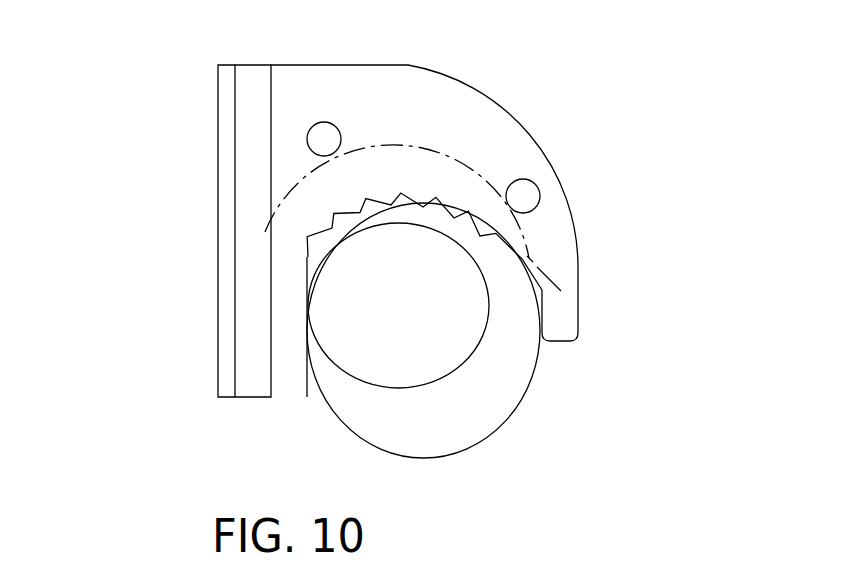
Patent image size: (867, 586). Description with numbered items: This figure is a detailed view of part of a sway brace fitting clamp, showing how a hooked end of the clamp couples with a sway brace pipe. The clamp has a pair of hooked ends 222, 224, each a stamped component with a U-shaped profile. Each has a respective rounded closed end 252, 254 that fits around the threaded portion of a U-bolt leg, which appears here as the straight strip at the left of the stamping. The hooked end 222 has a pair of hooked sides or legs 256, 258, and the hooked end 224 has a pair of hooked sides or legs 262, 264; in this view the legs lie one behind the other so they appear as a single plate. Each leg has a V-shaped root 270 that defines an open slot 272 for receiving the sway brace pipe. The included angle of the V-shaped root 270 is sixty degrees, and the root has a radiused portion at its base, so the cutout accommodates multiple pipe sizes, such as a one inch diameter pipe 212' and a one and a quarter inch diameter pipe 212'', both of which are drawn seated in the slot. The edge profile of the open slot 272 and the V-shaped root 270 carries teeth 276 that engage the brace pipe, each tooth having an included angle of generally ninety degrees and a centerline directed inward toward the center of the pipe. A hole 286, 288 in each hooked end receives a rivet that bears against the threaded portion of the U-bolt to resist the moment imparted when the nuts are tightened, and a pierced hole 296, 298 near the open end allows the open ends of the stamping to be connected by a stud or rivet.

The hooked end 222 is at (159, 210).
The hooked end 224 is at (159, 210).
The rounded closed end 252 is at (141, 231).
The rounded closed end 254 is at (228, 135).
The hooked side 256 is at (530, 210).
The hooked side 258 is at (530, 210).
The hooked side 262 is at (530, 210).
The hooked side 264 is at (530, 210).
The V-shaped root 270 is at (530, 235).
The open slot 272 is at (473, 354).
The teeth 276 is at (515, 245).
The hole 286 is at (380, 90).
The hole 288 is at (322, 132).
The pierced hole 296 is at (617, 175).
The pierced hole 298 is at (617, 175).
The diameter pipe 212' is at (398, 305).
The diameter pipe 212'' is at (473, 354).